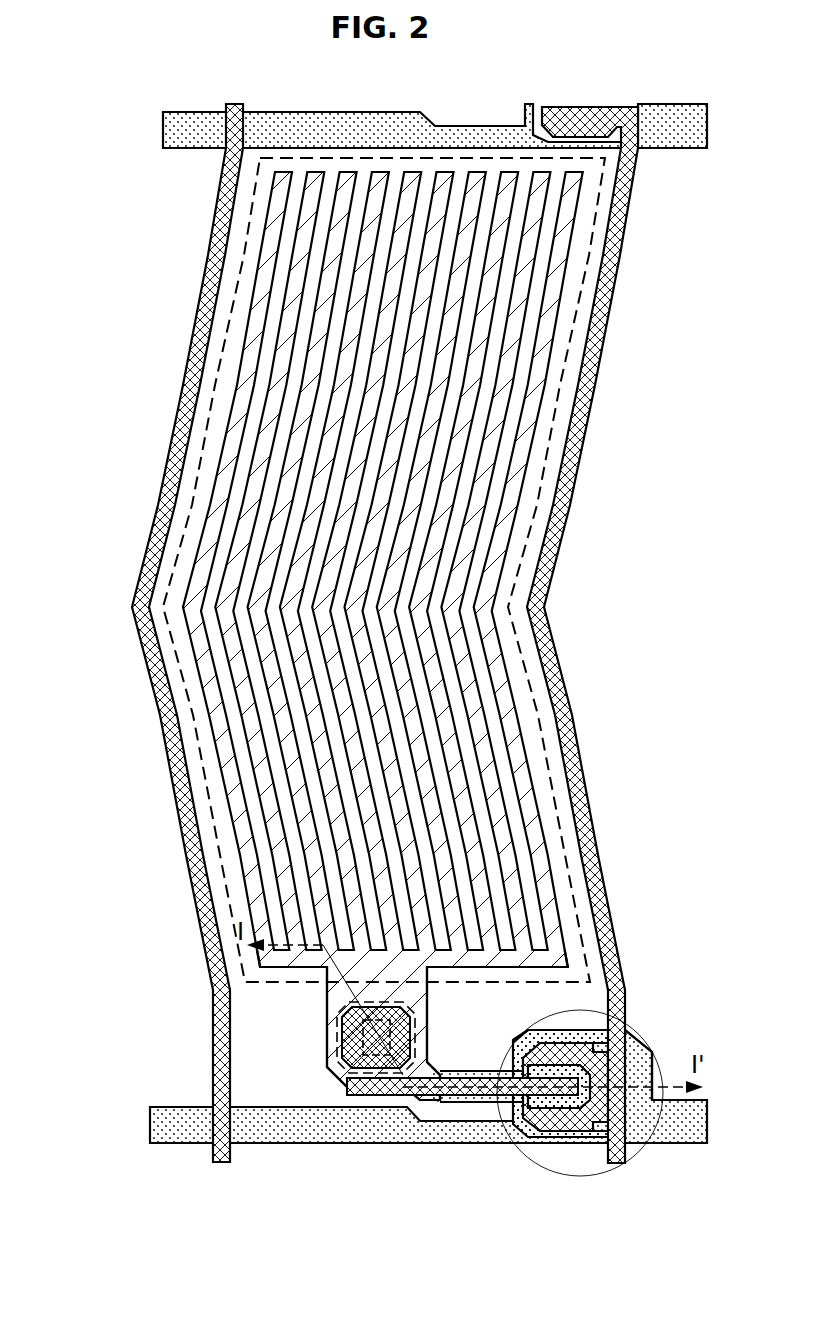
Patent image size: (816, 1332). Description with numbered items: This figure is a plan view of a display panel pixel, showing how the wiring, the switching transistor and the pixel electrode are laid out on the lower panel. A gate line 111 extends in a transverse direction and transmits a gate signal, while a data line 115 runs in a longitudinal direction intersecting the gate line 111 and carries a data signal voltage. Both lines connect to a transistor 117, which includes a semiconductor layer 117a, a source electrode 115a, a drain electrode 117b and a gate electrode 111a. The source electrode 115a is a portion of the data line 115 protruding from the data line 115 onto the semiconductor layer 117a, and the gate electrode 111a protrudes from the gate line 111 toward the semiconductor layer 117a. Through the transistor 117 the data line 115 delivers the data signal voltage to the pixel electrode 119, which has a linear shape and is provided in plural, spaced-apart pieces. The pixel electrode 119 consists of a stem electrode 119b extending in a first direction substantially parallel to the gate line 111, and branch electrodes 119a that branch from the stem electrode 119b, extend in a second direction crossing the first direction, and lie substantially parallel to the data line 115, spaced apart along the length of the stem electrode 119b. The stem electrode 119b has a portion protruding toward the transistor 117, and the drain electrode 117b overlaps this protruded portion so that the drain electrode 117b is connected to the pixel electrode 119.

The gate line 111 is at (300, 1135).
The gate electrode 111a is at (582, 1032).
The data line 115 is at (582, 748).
The source electrode 115a is at (572, 1125).
The transistor 117 is at (638, 1026).
The semiconductor layer 117a is at (540, 1112).
The drain electrode 117b is at (466, 1102).
The pixel electrode 119 is at (310, 636).
The branch electrode 119a is at (245, 882).
The stem electrode 119b is at (302, 966).